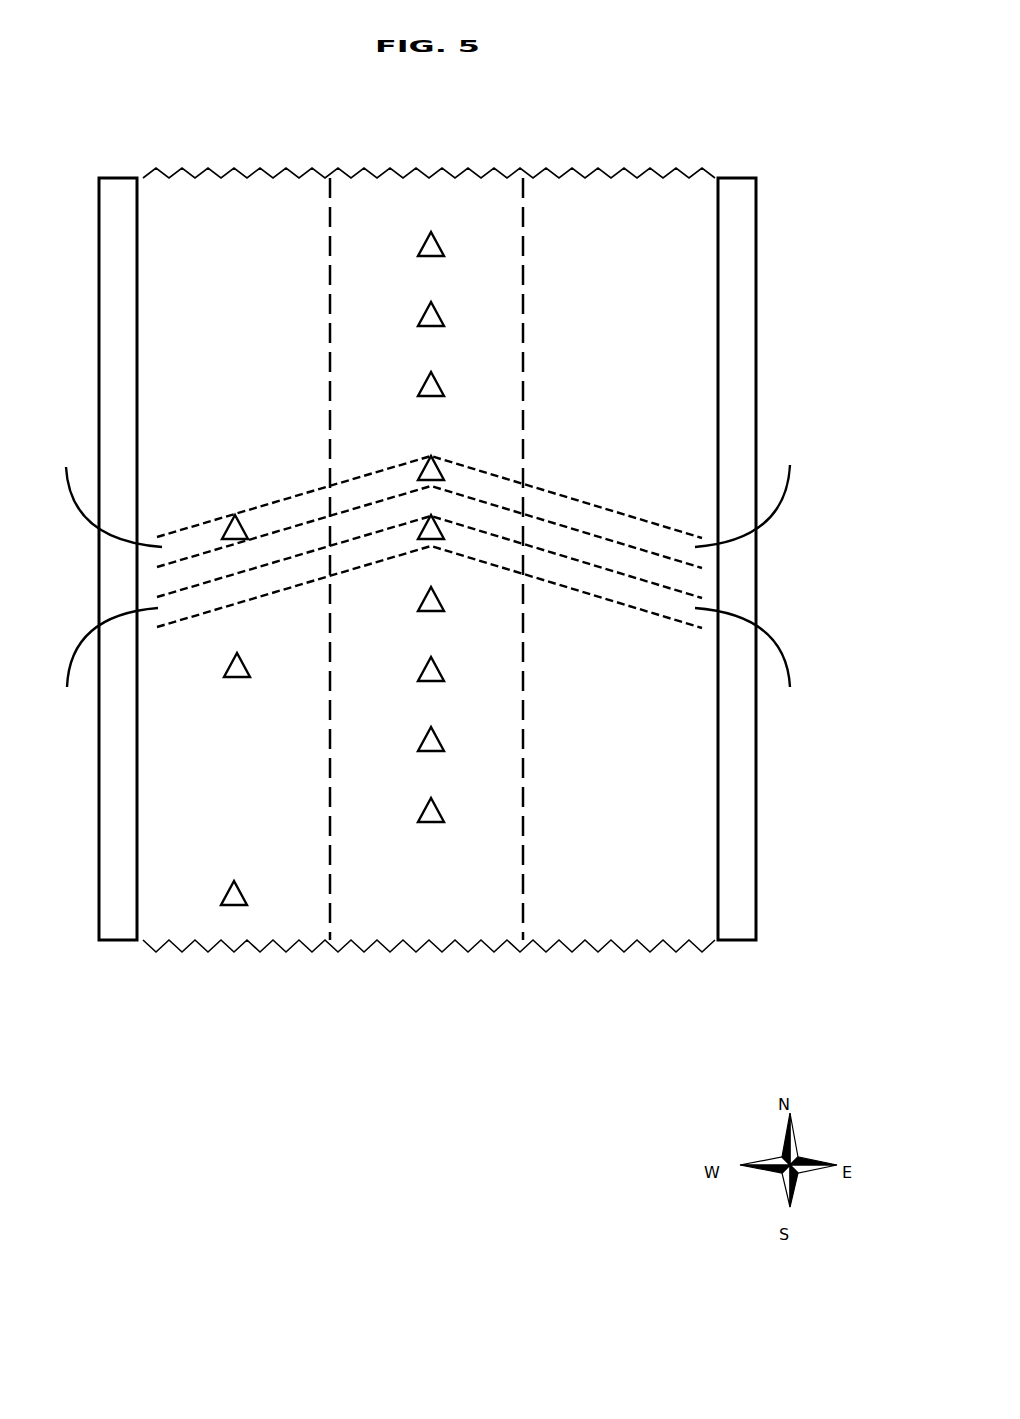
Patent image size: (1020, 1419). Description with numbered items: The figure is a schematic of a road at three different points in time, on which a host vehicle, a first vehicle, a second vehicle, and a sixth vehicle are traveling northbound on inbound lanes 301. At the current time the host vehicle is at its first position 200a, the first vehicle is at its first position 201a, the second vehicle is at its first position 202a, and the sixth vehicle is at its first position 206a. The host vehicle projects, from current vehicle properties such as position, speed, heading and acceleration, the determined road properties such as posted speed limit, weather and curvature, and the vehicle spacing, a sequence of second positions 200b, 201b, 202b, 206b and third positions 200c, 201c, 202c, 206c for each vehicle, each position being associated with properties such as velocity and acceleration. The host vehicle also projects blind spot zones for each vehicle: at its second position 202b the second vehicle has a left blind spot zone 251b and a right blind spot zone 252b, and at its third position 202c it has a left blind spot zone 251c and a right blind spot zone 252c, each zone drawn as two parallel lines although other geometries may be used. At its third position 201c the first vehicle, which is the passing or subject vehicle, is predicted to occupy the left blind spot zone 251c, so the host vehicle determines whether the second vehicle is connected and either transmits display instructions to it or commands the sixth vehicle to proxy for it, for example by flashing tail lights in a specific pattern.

The inbound lanes 301 is at (403, 158).
The third position of sixth vehicle 206c is at (428, 244).
The second position of sixth vehicle 206b is at (428, 314).
The first position of sixth vehicle 206a is at (428, 384).
The third position of second vehicle 202c is at (428, 468).
The second position of second vehicle 202b is at (428, 527).
The first position of second vehicle 202a is at (456, 591).
The third position of host vehicle 200c is at (428, 669).
The second position of host vehicle 200b is at (428, 739).
The first position of host vehicle 200a is at (428, 810).
The third position of first vehicle 201c is at (232, 527).
The second position of first vehicle 201b is at (234, 665).
The first position of first vehicle 201a is at (231, 893).
The left blind spot zone 251c is at (101, 494).
The left blind spot zone 251b is at (99, 659).
The right blind spot zone 252c is at (755, 494).
The right blind spot zone 252b is at (758, 659).